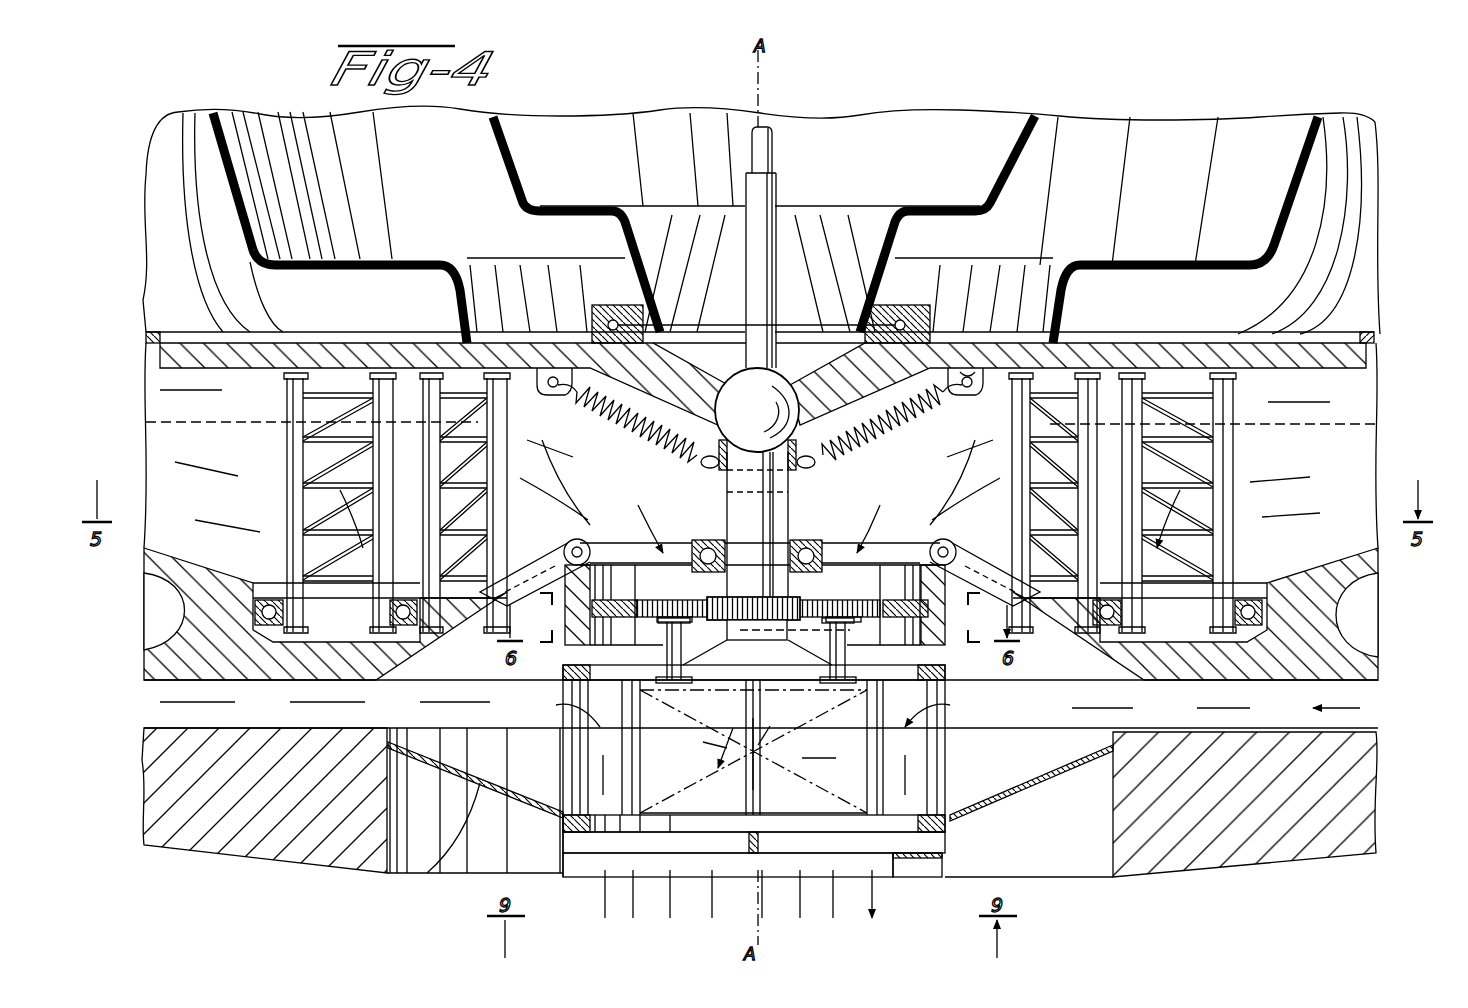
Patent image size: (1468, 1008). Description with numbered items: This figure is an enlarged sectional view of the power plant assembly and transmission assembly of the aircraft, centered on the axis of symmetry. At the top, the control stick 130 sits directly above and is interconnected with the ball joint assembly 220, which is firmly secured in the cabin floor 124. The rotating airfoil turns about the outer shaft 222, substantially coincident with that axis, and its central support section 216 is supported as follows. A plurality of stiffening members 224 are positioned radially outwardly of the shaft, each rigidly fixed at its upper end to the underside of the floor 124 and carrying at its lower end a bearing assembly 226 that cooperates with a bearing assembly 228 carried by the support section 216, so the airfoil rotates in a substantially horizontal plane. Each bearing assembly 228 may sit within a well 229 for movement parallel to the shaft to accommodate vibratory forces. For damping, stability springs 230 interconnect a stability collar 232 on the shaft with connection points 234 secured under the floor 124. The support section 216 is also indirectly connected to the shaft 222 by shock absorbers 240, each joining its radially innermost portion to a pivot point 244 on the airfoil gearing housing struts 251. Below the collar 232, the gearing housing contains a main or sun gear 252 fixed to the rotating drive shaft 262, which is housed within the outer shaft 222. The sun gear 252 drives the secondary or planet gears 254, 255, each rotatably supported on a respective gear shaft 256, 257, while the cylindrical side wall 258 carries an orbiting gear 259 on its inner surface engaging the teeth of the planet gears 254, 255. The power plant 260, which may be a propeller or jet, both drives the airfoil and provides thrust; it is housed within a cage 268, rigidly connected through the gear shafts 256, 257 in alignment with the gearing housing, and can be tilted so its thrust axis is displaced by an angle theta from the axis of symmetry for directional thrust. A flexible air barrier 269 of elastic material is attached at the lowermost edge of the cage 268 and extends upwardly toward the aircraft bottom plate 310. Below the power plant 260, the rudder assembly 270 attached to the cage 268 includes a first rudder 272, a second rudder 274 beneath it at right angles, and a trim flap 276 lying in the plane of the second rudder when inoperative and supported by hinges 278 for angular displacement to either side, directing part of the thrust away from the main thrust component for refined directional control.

The cabin floor 124 is at (978, 342).
The control stick 130 is at (763, 202).
The central support section 216 is at (1300, 663).
The ball joint assembly 220 is at (776, 406).
The outer shaft 222 is at (735, 508).
The stiffening members 224 is at (290, 452).
The bearing assembly 226 is at (280, 603).
The bearing assembly 228 is at (253, 617).
The well 229 is at (1248, 580).
The stability springs 230 is at (898, 433).
The stability collar 232 is at (795, 470).
The connection points 234 is at (975, 388).
The shock absorbers 240 is at (527, 567).
The support bar end 244 is at (933, 542).
The airfoil gearing housing struts 251 is at (867, 550).
The main or sun gear 252 is at (742, 622).
The secondary or planet gear 254 is at (660, 602).
The secondary or planet gear 255 is at (867, 603).
The gear shaft 256 is at (665, 653).
The gear shaft 257 is at (848, 653).
The side wall 258 is at (545, 655).
The orbiting gear 259 is at (640, 602).
The power plant 260 is at (753, 771).
The drive shaft 262 is at (850, 632).
The cage 268 is at (567, 758).
The flexible air barrier 269 is at (430, 874).
The rudder assembly 270 is at (898, 892).
The first rudder 272 is at (748, 843).
The second rudder 274 is at (588, 858).
The trim flap 276 is at (922, 863).
The hinges 278 is at (918, 848).
The aircraft bottom plate 310 is at (1227, 832).